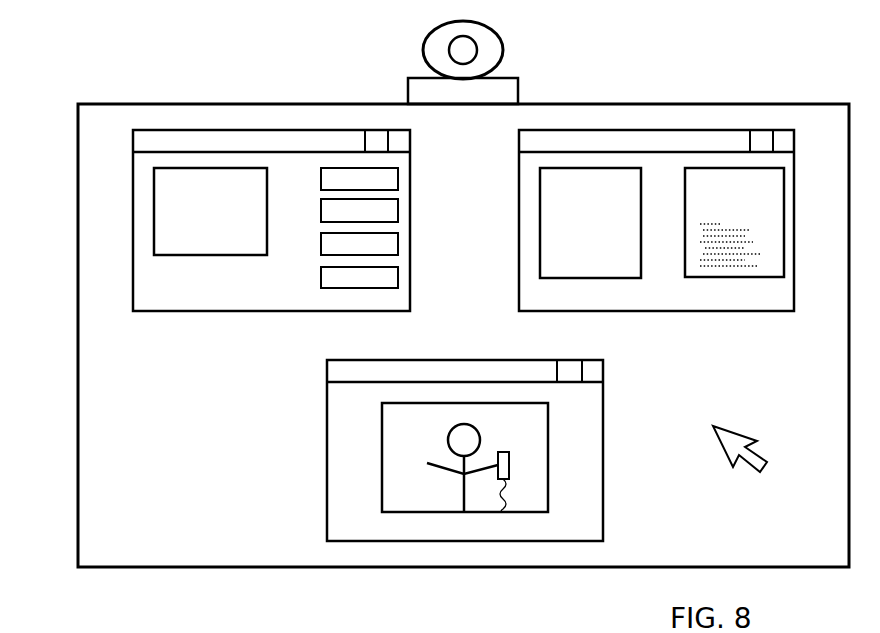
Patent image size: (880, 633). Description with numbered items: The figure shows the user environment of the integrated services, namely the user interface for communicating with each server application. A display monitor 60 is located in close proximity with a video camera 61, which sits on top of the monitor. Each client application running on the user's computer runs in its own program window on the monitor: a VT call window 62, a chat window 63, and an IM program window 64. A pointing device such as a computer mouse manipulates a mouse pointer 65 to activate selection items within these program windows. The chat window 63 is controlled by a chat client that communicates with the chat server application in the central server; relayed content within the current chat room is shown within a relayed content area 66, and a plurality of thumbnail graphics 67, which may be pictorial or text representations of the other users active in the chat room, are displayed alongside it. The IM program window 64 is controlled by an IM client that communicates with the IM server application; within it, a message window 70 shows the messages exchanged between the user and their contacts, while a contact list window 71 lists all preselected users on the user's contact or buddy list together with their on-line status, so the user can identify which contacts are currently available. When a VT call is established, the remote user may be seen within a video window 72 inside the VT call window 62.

The display monitor 60 is at (78, 352).
The video camera 61 is at (432, 32).
The VT call window 62 is at (327, 410).
The chat window 63 is at (163, 312).
The IM program window 64 is at (519, 170).
The mouse pointer 65 is at (740, 435).
The relayed content area 66 is at (232, 256).
The thumbnail graphics 67 is at (398, 178).
The message window 70 is at (540, 258).
The contact list window 71 is at (784, 200).
The video window 72 is at (382, 487).